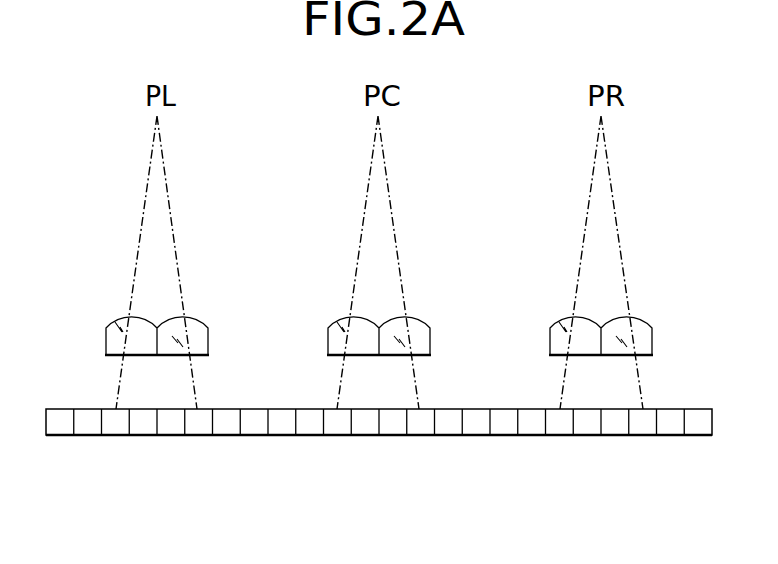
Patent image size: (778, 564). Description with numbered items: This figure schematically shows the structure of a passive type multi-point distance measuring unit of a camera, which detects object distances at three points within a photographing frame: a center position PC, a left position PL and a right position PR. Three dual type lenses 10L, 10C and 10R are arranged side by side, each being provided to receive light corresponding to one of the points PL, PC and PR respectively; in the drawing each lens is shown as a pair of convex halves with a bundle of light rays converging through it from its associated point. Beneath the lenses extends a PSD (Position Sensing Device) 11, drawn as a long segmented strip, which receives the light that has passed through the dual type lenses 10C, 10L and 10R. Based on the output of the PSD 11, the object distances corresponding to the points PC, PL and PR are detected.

The dual type lens 10L is at (112, 322).
The dual type lens 10C is at (334, 322).
The dual type lens 10R is at (556, 322).
The PSD (Position Sensing Device) 11 is at (282, 450).